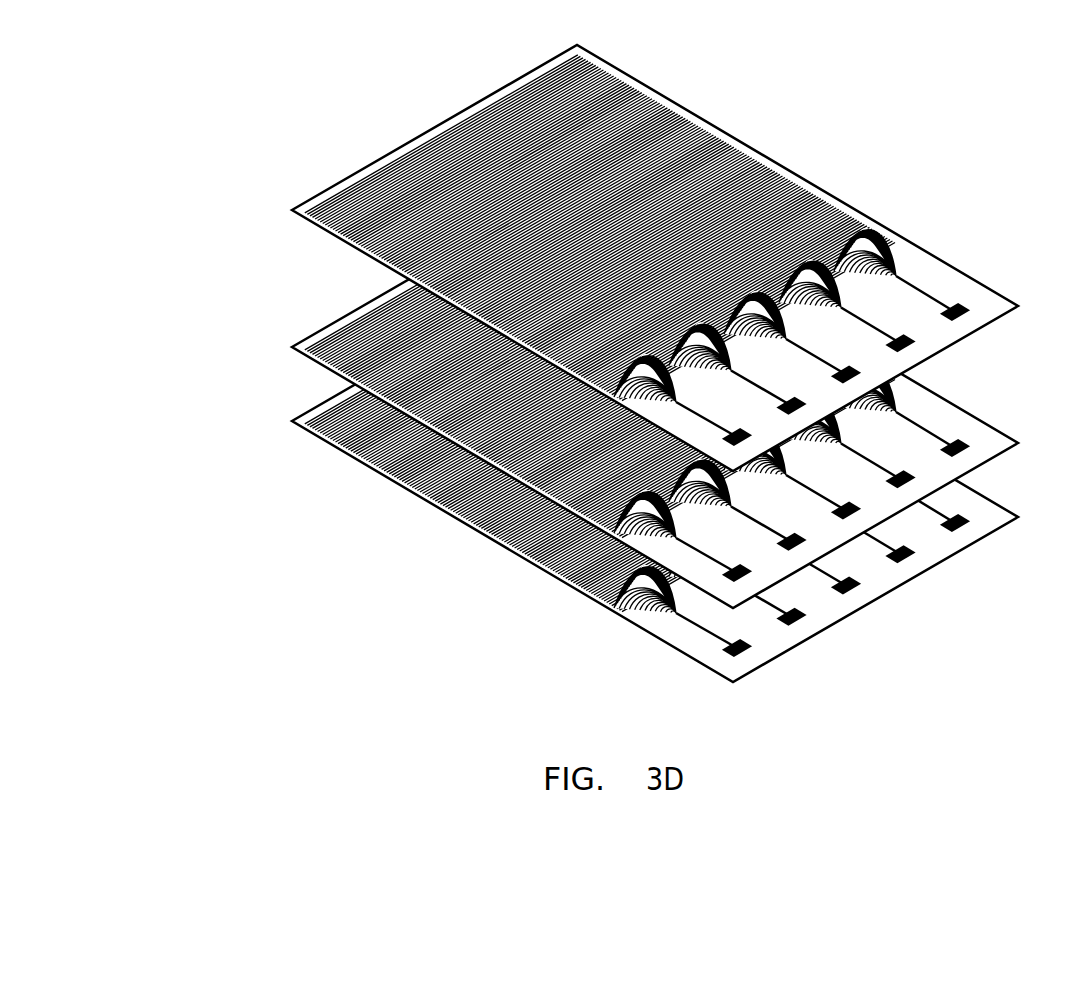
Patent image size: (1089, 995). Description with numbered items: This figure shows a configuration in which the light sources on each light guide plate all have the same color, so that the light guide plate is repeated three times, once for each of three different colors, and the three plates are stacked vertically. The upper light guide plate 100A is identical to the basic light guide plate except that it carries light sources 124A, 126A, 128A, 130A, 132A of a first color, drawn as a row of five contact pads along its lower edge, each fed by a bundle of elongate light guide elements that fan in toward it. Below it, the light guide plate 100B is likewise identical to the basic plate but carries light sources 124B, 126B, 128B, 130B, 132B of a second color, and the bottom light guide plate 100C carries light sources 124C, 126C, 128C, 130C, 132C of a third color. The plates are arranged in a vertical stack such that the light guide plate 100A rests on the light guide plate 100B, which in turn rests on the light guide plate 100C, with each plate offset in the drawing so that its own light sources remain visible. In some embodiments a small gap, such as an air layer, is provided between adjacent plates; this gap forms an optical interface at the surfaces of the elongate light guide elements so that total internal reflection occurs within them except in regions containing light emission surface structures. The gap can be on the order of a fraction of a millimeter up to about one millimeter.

The light guide plate 100A is at (291, 211).
The light guide plate 100B is at (291, 348).
The light guide plate 100C is at (291, 422).
The light source 124A is at (943, 276).
The light source 126A is at (880, 326).
The light source 128A is at (824, 357).
The light source 130A is at (770, 389).
The light source 132A is at (717, 420).
The light source 124B is at (942, 413).
The light source 126B is at (879, 463).
The light source 128B is at (824, 494).
The light source 130B is at (770, 525).
The light source 132B is at (716, 557).
The light source 124C is at (971, 534).
The light source 126C is at (918, 565).
The light source 128C is at (862, 596).
The light source 130C is at (808, 628).
The light source 132C is at (754, 659).